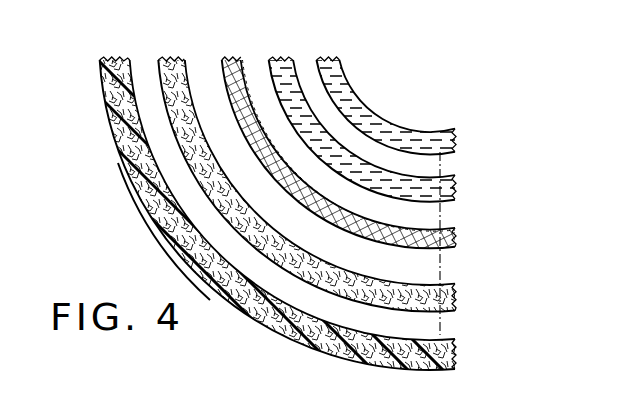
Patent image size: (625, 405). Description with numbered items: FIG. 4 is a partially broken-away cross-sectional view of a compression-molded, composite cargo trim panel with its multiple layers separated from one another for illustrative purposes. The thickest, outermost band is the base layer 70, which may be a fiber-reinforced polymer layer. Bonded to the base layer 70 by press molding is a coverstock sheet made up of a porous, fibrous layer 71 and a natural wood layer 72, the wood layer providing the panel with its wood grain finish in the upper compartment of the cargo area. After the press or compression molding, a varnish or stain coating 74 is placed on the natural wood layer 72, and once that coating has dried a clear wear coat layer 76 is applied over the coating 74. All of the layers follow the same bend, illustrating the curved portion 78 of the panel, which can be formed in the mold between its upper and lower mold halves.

The base layer 70 is at (458, 354).
The porous, fibrous layer 71 is at (458, 297).
The natural wood layer 72 is at (458, 238).
The varnish or stain coating 74 is at (458, 188).
The clear wear coat layer 76 is at (458, 140).
The curved portion 78 is at (162, 237).